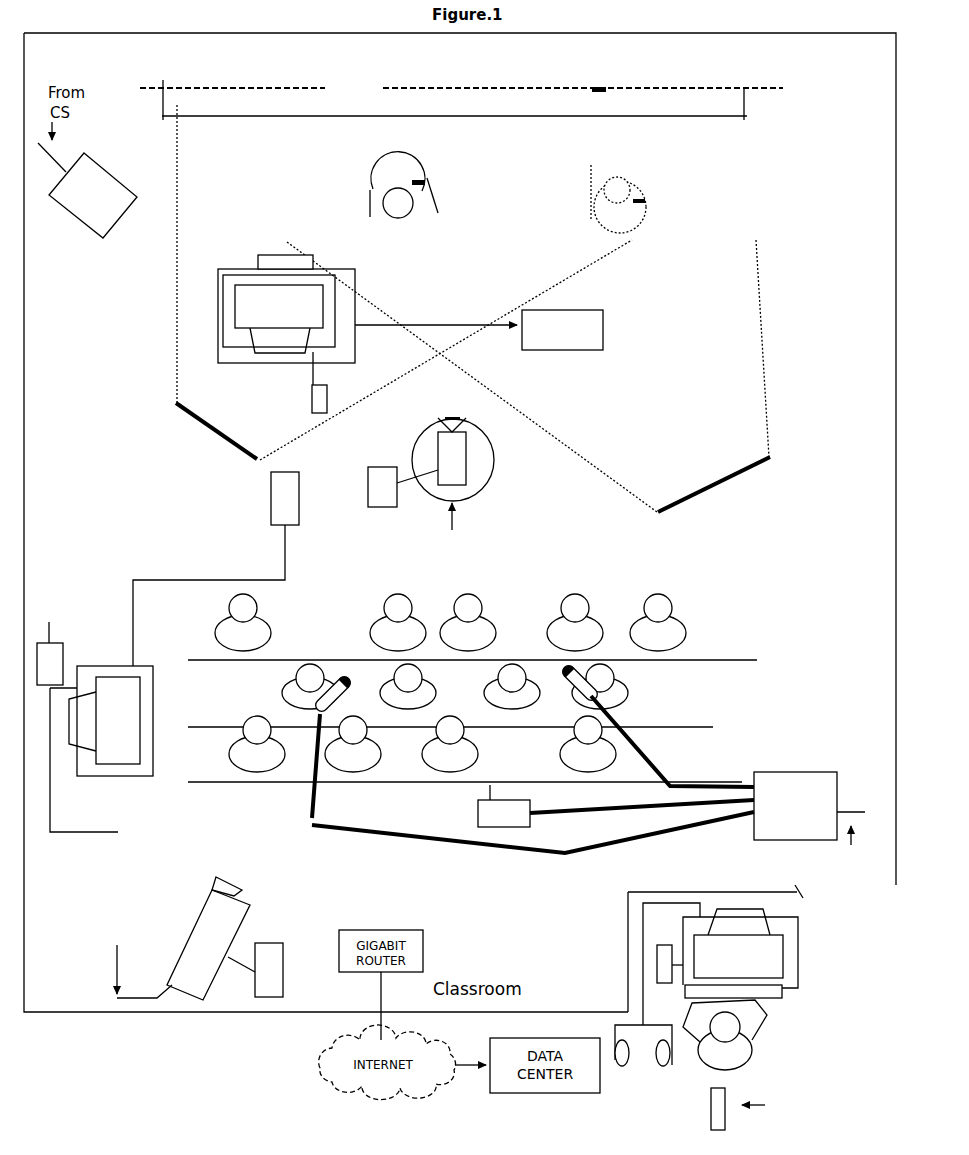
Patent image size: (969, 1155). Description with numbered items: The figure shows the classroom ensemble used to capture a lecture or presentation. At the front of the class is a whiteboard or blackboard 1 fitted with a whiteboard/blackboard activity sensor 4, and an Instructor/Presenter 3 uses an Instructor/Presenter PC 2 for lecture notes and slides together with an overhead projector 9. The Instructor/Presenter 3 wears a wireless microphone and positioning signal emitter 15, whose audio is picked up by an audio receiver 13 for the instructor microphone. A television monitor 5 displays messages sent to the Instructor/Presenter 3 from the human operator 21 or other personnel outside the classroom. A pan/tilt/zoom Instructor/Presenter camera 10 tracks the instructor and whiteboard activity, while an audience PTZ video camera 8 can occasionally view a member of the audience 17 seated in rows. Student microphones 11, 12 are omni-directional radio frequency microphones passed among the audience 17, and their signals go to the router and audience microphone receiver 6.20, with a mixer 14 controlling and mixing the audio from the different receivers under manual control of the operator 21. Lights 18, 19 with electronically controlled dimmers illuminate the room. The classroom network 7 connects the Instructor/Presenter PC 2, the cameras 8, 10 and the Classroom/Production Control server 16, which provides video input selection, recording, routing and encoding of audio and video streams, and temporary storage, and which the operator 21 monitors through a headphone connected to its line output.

The whiteboard or blackboard 1 is at (461, 100).
The Instructor/Presenter PC 2 is at (333, 284).
The Instructor/Presenter 3 is at (381, 161).
The whiteboard/blackboard activity sensor 4 is at (605, 84).
The television monitor 5 is at (77, 228).
The router and audience microphone audio receiver 6.20 is at (131, 780).
The classroom network 7 is at (267, 487).
The audience PTZ video camera 8 is at (168, 902).
The overhead projector 9 is at (479, 330).
The Instructor/Presenter camera 10 is at (470, 471).
The student microphone 11 is at (312, 722).
The student microphone 12 is at (571, 689).
The audio receiver 13 is at (488, 830).
The mixer 14 is at (769, 766).
The wireless microphone and positioning signal emitter 15 is at (427, 165).
The Classroom/Production Control server 16 is at (679, 927).
The audience 17 is at (592, 596).
The light with dimmer 18 is at (220, 428).
The light with dimmer 19 is at (714, 481).
The human operator 21 is at (811, 985).